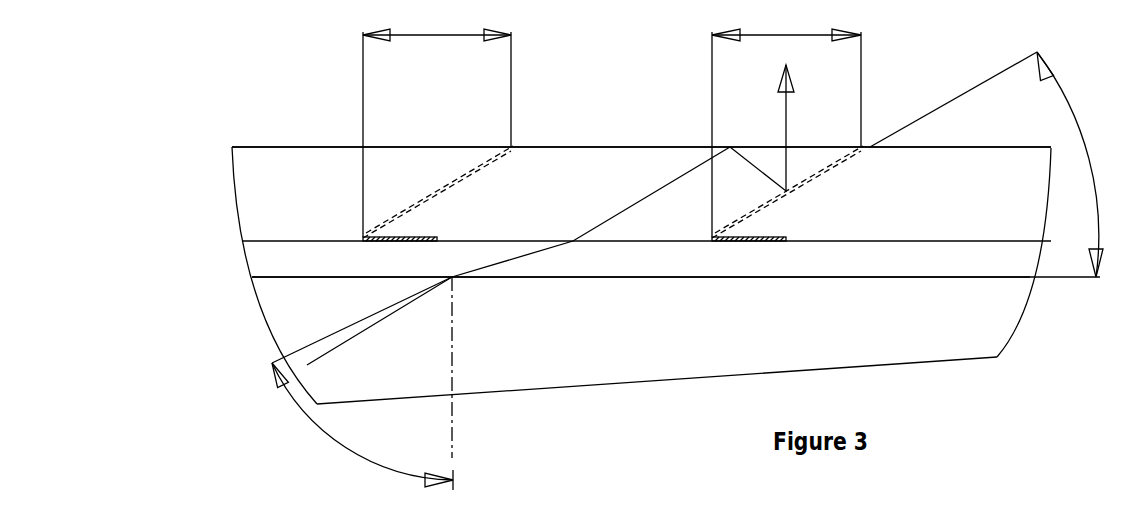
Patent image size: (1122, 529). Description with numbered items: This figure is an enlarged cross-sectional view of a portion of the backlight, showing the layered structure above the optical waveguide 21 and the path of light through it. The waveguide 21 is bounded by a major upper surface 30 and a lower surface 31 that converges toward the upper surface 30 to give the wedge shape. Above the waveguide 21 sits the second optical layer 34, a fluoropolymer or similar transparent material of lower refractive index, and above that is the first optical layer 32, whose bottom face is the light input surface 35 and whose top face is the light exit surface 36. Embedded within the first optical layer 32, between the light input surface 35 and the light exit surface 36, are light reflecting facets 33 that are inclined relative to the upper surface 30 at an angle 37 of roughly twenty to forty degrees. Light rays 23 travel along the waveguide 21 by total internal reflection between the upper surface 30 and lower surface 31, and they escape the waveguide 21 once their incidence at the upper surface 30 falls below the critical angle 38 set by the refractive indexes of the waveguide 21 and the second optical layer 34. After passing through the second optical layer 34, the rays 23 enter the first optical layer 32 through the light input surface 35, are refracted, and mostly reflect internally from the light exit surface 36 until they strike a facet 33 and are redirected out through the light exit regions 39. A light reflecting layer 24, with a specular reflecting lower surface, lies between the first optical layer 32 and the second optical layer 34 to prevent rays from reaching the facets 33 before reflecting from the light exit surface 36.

The optical waveguide 21 is at (842, 340).
The light rays 23 is at (787, 123).
The light reflecting layer 24 is at (440, 237).
The upper surface 30 is at (322, 278).
The lower surface 31 is at (638, 383).
The first optical layer 32 is at (257, 193).
The embedded light reflecting facets 33 is at (433, 192).
The second optical layer 34 is at (265, 260).
The light input surface 35 is at (300, 241).
The light exit surface 36 is at (285, 147).
The angle 37 is at (987, 164).
The critical angle 38 is at (362, 383).
The light exit regions 39 is at (612, 123).